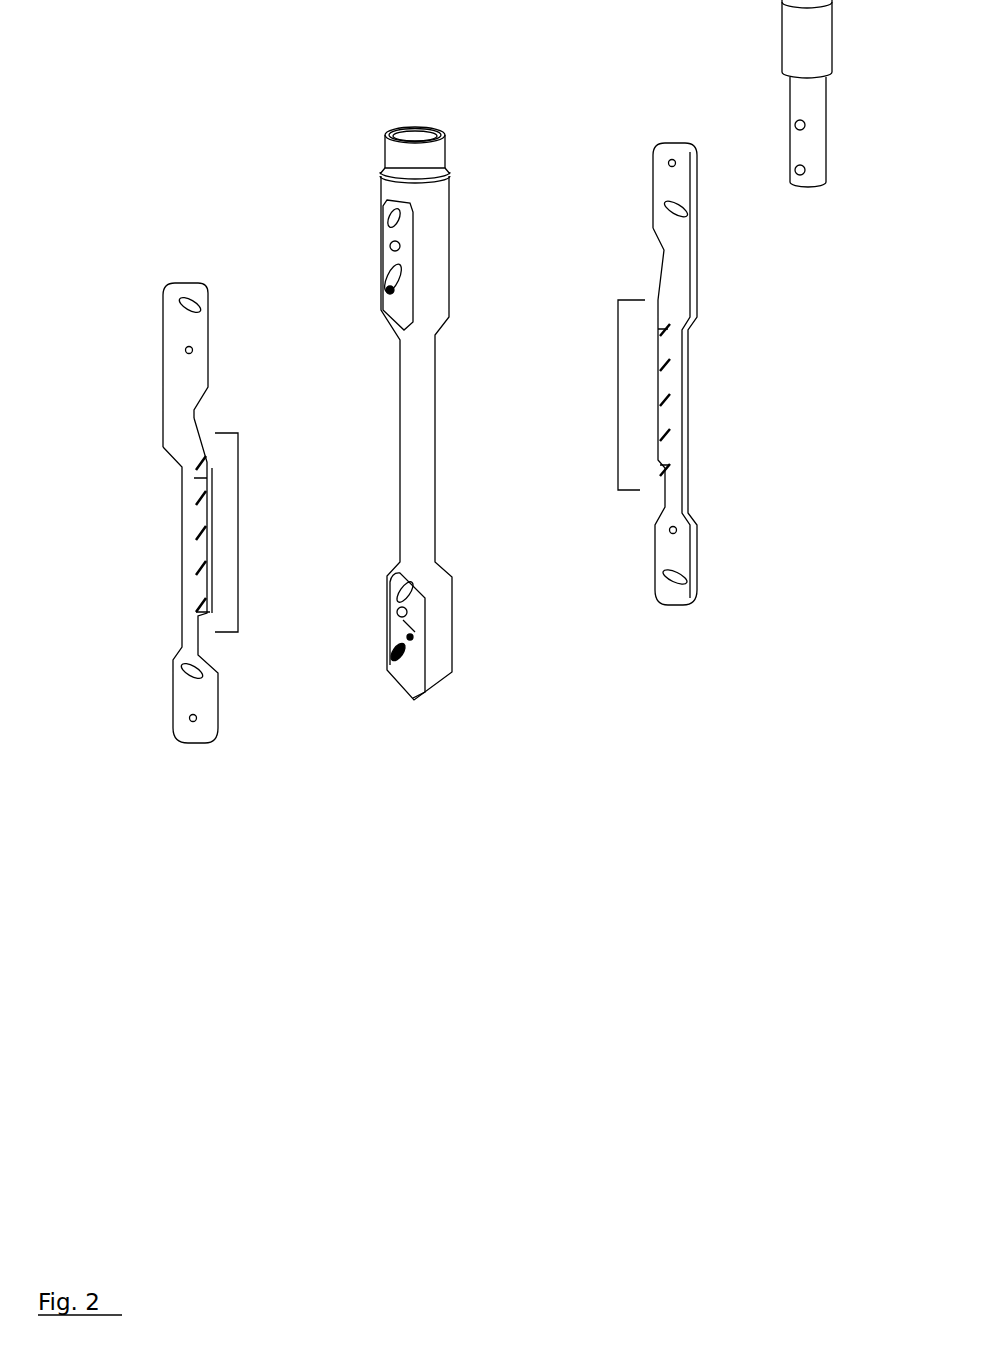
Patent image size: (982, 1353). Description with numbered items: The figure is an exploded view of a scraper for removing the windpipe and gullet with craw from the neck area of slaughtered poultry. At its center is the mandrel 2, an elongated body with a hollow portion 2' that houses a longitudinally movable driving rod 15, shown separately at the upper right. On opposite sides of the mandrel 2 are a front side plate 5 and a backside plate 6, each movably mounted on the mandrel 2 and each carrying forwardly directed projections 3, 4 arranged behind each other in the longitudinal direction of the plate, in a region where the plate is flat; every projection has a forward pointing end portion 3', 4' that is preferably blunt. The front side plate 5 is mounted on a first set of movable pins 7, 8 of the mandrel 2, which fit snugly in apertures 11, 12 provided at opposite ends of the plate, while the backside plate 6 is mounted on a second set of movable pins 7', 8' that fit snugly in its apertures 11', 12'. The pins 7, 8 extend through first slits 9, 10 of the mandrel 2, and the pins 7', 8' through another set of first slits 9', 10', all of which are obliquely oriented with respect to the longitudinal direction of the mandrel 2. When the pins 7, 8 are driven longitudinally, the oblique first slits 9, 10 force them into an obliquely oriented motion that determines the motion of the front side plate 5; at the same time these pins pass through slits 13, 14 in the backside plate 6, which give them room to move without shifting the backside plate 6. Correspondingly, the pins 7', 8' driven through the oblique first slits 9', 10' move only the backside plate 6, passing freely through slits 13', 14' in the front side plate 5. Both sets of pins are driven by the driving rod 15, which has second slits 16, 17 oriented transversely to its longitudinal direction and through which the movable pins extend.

The mandrel 2 is at (382, 413).
The hollow portion 2' is at (376, 136).
The forwardly directed projection 3 is at (617, 395).
The forward pointing end portion 3' is at (617, 398).
The forwardly directed projection 4 is at (238, 532).
The forward pointing end portion 4' is at (246, 543).
The front side plate 5 is at (182, 541).
The backside plate 6 is at (690, 415).
The movable pin 7 is at (353, 286).
The movable pin 7' is at (356, 248).
The movable pin 8 is at (360, 654).
The movable pin 8' is at (359, 611).
The first slit 9 is at (441, 274).
The first slit 9' is at (452, 221).
The first slit 10 is at (461, 638).
The first slit 10' is at (466, 594).
The aperture 11 is at (137, 348).
The aperture 11' is at (620, 164).
The aperture 12 is at (139, 716).
The aperture 12' is at (621, 531).
The slit 13 is at (627, 206).
The slit 13' is at (142, 305).
The slit 14 is at (627, 578).
The slit 14' is at (143, 671).
The driving rod 15 is at (782, 38).
The second slit 16 is at (795, 171).
The second slit 17 is at (795, 125).